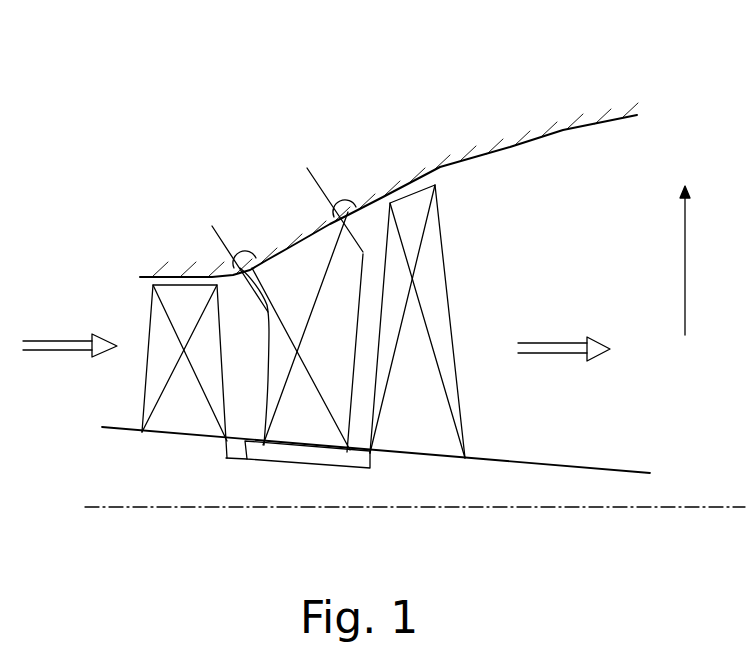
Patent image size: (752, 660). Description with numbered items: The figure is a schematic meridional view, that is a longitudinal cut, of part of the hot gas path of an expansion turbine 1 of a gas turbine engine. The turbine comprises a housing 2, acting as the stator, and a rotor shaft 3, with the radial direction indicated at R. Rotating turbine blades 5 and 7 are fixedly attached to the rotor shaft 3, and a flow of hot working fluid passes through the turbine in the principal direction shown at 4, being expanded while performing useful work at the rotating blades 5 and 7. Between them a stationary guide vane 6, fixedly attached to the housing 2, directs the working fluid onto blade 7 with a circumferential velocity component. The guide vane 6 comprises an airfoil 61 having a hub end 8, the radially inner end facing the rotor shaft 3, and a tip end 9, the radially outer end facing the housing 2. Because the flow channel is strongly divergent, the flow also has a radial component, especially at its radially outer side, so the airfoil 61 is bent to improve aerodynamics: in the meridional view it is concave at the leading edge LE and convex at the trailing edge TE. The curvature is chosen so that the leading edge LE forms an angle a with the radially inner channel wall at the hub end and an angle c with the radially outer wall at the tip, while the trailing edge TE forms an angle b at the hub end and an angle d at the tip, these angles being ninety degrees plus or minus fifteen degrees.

The expansion turbine 1 is at (472, 121).
The housing 2 is at (196, 261).
The rotor shaft 3 is at (153, 492).
The principal flow direction 4 is at (316, 335).
The rotating turbine blade 5 is at (188, 423).
The guide vane 6 is at (317, 325).
The airfoil 61 is at (317, 267).
The rotating turbine blade 7 is at (425, 433).
The hub end 8 is at (322, 440).
The tip end 9 is at (290, 247).
The angle a is at (263, 452).
The angle b is at (367, 457).
The angle c is at (248, 254).
The angle d is at (341, 200).
The leading edge LE is at (268, 363).
The trailing edge TE is at (363, 256).
The radial direction R is at (698, 260).